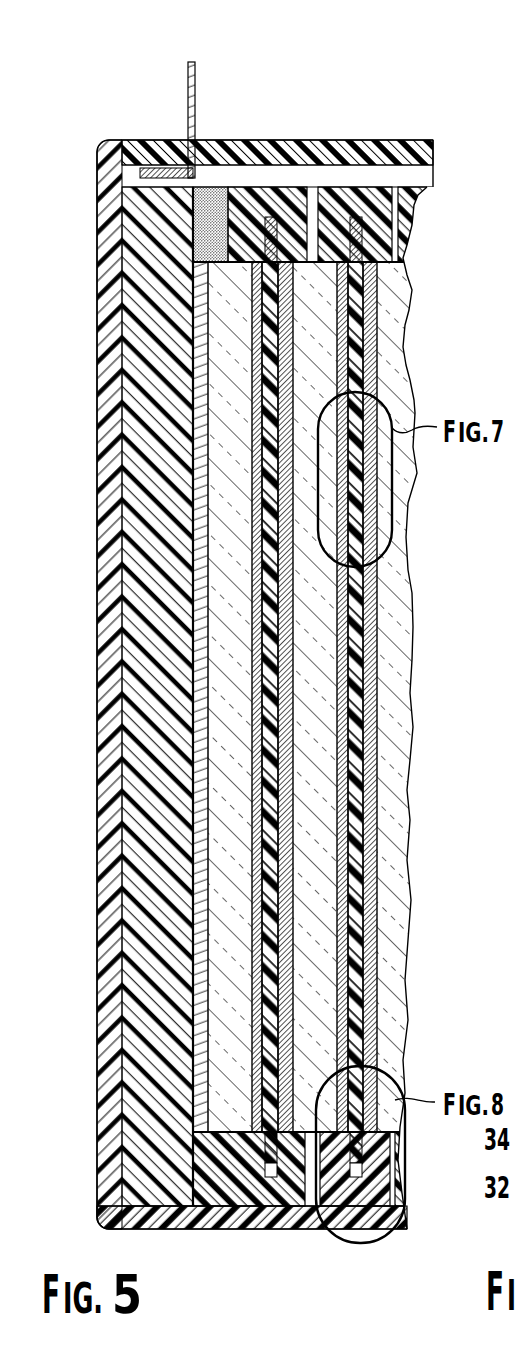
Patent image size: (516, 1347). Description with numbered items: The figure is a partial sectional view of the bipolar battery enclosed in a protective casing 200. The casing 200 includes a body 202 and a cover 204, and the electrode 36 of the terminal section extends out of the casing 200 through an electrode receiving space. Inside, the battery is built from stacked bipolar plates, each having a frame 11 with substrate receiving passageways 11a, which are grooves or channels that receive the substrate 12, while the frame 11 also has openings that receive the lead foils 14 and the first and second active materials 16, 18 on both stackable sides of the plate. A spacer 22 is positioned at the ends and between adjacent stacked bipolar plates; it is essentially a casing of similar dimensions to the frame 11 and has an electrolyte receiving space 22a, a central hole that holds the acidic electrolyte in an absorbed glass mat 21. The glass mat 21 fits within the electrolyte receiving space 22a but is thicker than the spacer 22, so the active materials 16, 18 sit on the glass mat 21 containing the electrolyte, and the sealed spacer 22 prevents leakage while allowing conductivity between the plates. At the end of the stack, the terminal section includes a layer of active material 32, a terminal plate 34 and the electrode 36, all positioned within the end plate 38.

The protective casing 200 is at (91, 226).
The body 202 is at (362, 141).
The cover 204 is at (97, 1032).
The end plate 38 is at (167, 1197).
The layer of active material 32 is at (200, 1100).
The terminal plate 34 is at (197, 1057).
The electrode 36 is at (190, 62).
The electrolyte receiving space 22a is at (228, 192).
The spacer 22 is at (266, 188).
The frame 11 is at (340, 196).
The substrate receiving passageways 11a is at (356, 220).
The substrate 12 is at (355, 598).
The lead foils 14 is at (366, 677).
The first active material 16 is at (343, 733).
The second active material 18 is at (370, 766).
The absorbed glass mat 21 is at (240, 667).